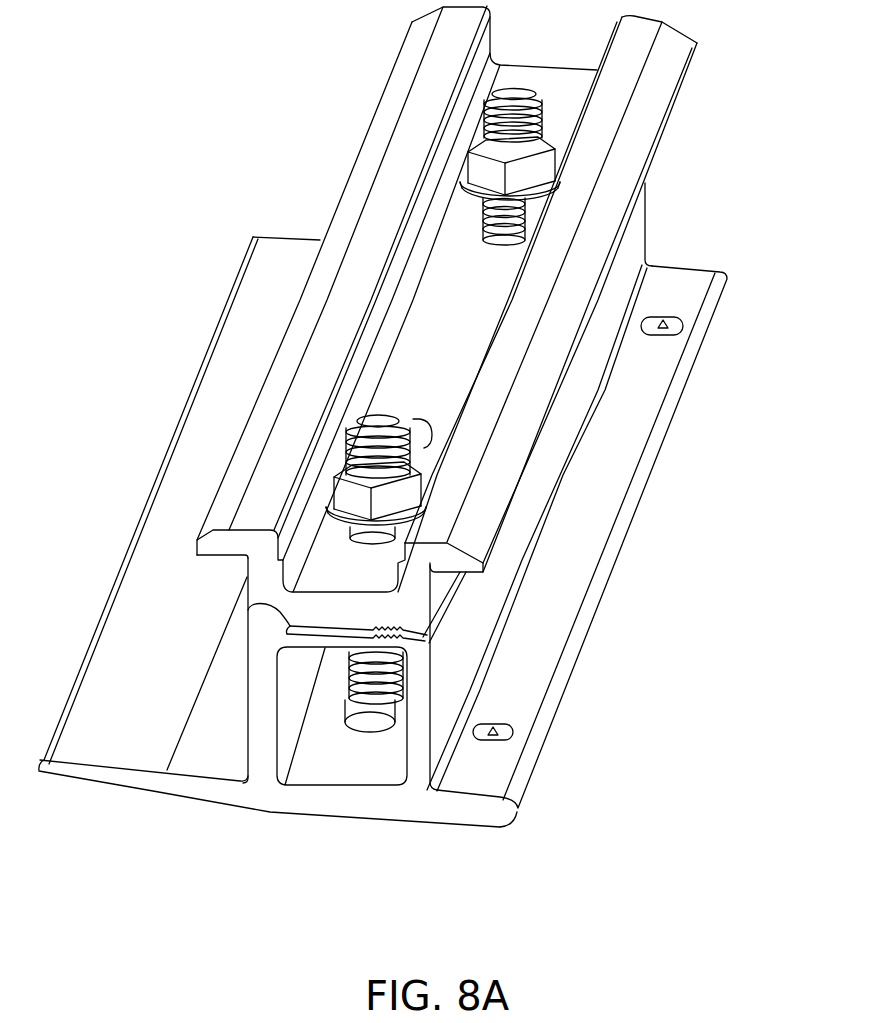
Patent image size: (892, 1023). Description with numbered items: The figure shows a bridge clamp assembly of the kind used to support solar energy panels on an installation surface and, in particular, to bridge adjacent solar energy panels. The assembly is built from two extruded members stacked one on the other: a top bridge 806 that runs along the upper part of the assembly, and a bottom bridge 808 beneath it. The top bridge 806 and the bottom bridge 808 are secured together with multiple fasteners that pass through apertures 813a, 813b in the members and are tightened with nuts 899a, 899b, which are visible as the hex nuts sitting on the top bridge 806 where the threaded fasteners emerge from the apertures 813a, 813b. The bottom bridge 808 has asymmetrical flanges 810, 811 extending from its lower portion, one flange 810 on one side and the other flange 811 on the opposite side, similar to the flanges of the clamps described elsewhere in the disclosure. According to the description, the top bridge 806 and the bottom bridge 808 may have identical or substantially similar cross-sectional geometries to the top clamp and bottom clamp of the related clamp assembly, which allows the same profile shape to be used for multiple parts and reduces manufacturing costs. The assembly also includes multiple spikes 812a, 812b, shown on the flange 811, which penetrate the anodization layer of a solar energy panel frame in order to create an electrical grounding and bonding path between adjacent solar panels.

The top bridge 806 is at (699, 57).
The bottom bridge 808 is at (315, 817).
The flange 810 is at (95, 775).
The flange 811 is at (463, 827).
The spike 812a is at (684, 326).
The spike 812b is at (514, 732).
The aperture 813a is at (480, 222).
The aperture 813b is at (413, 418).
The nut 899a is at (467, 155).
The nut 899b is at (343, 468).